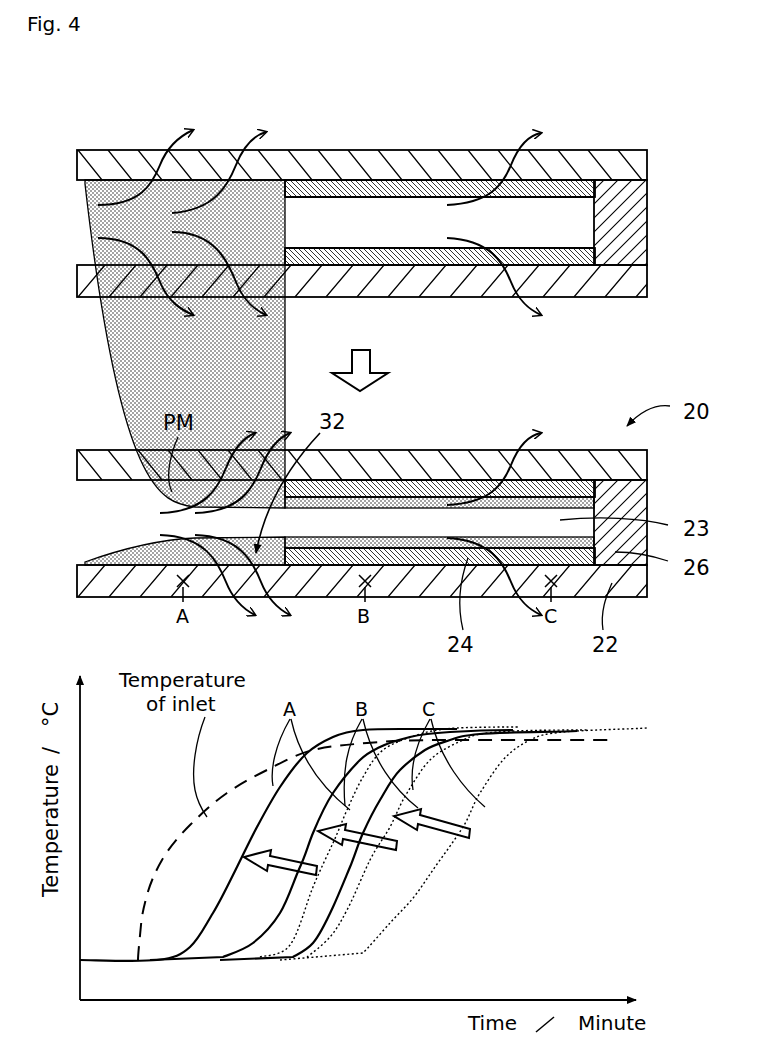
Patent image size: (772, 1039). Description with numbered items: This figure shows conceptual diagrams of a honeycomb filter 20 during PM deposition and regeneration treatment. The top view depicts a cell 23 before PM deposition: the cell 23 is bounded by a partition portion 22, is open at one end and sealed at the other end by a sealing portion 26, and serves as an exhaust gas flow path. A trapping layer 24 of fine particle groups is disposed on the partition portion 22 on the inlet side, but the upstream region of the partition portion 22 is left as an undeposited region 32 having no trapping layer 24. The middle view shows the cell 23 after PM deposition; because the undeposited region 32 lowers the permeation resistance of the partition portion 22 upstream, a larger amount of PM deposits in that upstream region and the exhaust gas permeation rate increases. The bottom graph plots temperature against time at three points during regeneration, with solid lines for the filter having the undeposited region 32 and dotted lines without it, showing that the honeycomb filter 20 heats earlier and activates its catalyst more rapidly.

The honeycomb filter 20 is at (627, 126).
The partition portion 22 is at (612, 283).
The cell 23 is at (560, 220).
The trapping layer 24 is at (468, 258).
The sealing portion 26 is at (615, 252).
The undeposited region 32 is at (259, 246).